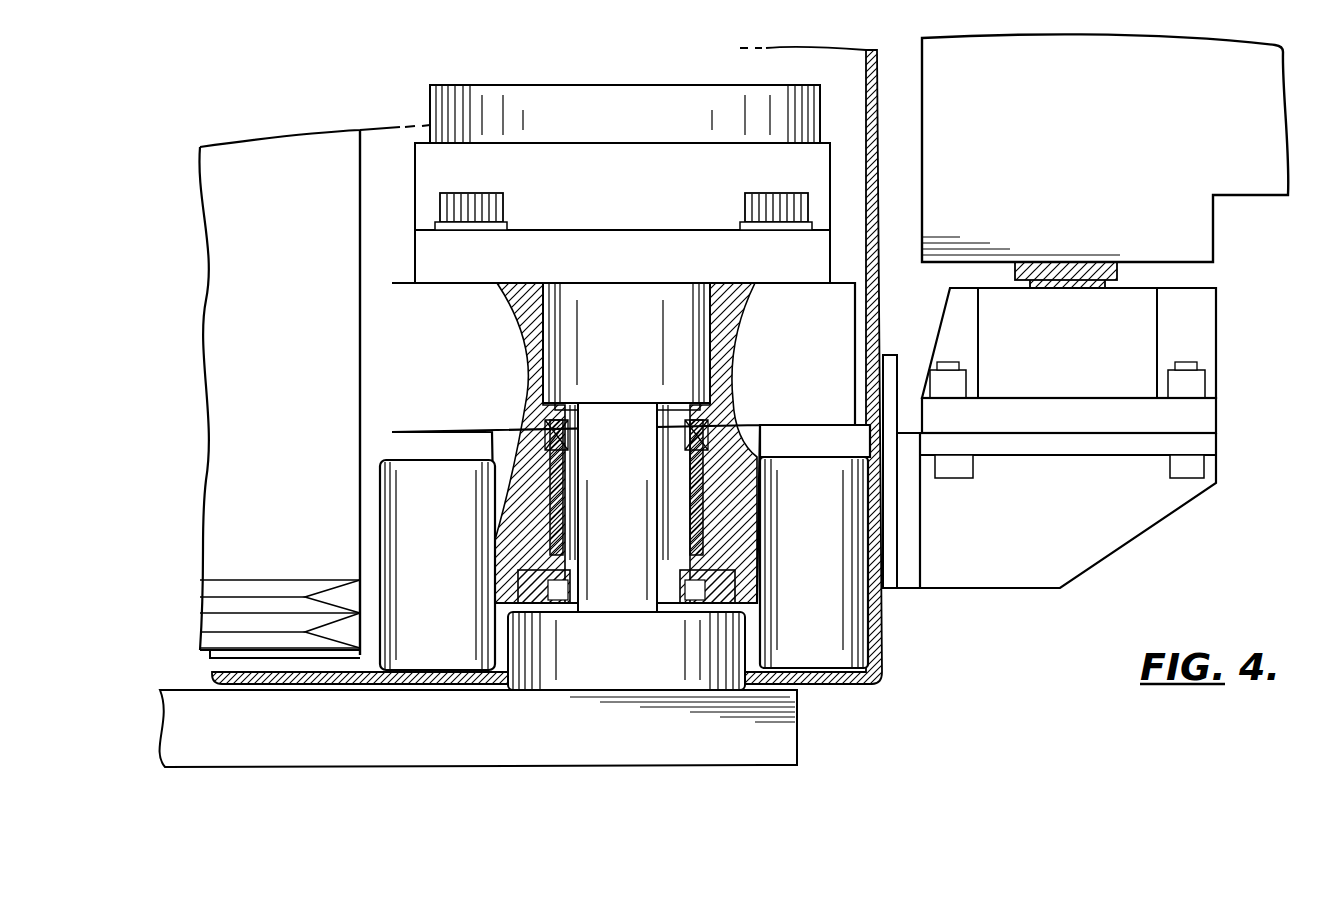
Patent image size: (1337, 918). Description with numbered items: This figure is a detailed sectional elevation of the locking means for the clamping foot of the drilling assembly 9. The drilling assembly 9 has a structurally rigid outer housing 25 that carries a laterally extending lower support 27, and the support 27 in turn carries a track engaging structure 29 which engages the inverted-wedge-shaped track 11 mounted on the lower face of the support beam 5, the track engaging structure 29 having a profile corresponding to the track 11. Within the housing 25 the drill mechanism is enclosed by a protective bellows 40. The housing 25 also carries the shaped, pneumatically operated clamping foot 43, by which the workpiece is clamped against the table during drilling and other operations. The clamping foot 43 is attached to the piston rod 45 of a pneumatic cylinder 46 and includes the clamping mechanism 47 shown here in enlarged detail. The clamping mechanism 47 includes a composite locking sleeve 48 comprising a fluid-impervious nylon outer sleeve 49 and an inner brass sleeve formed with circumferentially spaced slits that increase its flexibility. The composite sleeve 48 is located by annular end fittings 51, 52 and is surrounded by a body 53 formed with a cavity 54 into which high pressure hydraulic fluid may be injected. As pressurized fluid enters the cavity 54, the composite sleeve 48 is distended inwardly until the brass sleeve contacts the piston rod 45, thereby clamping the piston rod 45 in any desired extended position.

The support beam 5 is at (1105, 148).
The drilling assembly 9 is at (297, 125).
The track 11 is at (1080, 340).
The outer housing 25 is at (876, 108).
The support 27 is at (1130, 503).
The track engaging structure 29 is at (1013, 405).
The protective bellows 40 is at (268, 597).
The clamping foot 43 is at (798, 717).
The piston rod 45 is at (621, 507).
The pneumatic cylinder 46 is at (622, 184).
The clamping mechanism 47 is at (468, 405).
The composite locking sleeve 48 is at (545, 513).
The nylon outer sleeve 49 is at (705, 485).
The annular end fitting 51 is at (737, 412).
The annular end fitting 52 is at (727, 562).
The body 53 is at (745, 322).
The cavity 54 is at (530, 460).